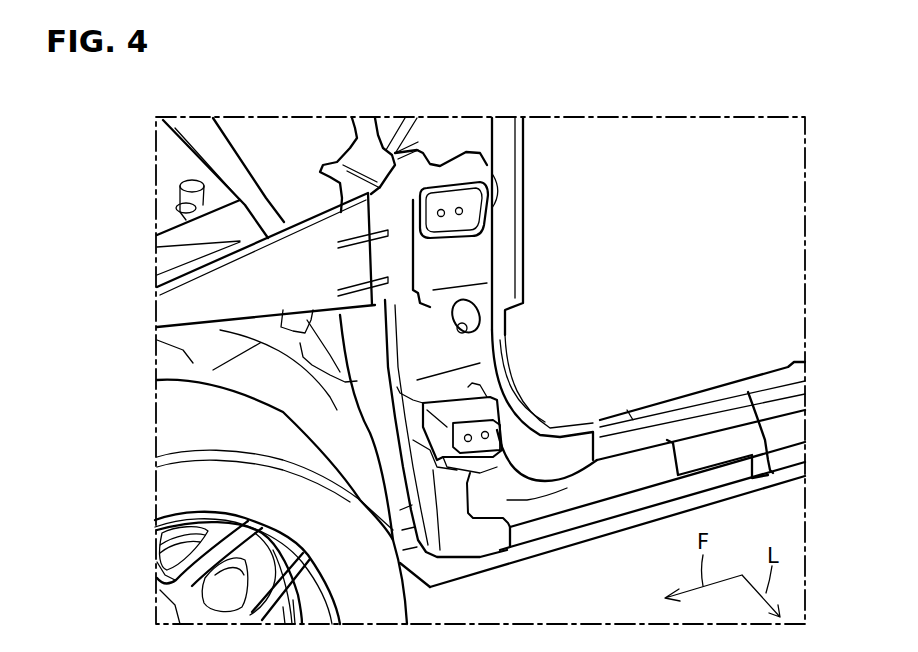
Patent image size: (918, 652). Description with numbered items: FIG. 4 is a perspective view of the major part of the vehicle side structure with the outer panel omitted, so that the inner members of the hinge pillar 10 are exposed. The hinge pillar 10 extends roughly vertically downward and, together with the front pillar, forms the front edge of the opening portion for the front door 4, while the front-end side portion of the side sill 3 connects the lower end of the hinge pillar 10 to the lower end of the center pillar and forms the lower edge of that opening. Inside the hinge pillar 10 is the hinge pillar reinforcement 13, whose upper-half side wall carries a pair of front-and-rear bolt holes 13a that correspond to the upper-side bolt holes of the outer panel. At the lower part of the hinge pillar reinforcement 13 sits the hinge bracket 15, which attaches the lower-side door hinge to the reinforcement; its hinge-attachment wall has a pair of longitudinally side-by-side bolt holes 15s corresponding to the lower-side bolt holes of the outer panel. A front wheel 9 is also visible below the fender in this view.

The side sill 3 is at (775, 410).
The front door 4 is at (708, 251).
The front wheel 9 is at (416, 603).
The hinge pillar 10 is at (532, 311).
The hinge pillar reinforcement 13 is at (505, 279).
The bolt holes 13a is at (459, 207).
The hinge bracket 15 is at (518, 420).
The bolt holes 15s is at (468, 441).